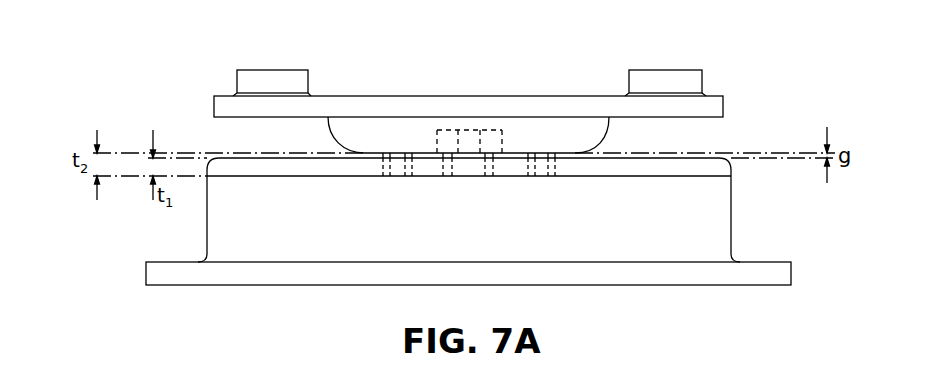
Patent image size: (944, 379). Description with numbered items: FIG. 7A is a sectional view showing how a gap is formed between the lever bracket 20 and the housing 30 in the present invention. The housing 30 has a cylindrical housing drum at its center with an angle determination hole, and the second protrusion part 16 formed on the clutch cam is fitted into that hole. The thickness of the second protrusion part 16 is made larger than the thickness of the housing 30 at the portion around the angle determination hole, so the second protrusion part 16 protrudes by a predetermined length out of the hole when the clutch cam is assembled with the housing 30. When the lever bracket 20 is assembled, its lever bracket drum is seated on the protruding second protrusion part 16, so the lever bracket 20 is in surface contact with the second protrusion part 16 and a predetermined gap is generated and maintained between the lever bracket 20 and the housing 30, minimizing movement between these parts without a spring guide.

The second protrusion part 16 is at (420, 153).
The lever bracket 20 is at (527, 108).
The housing 30 is at (715, 225).